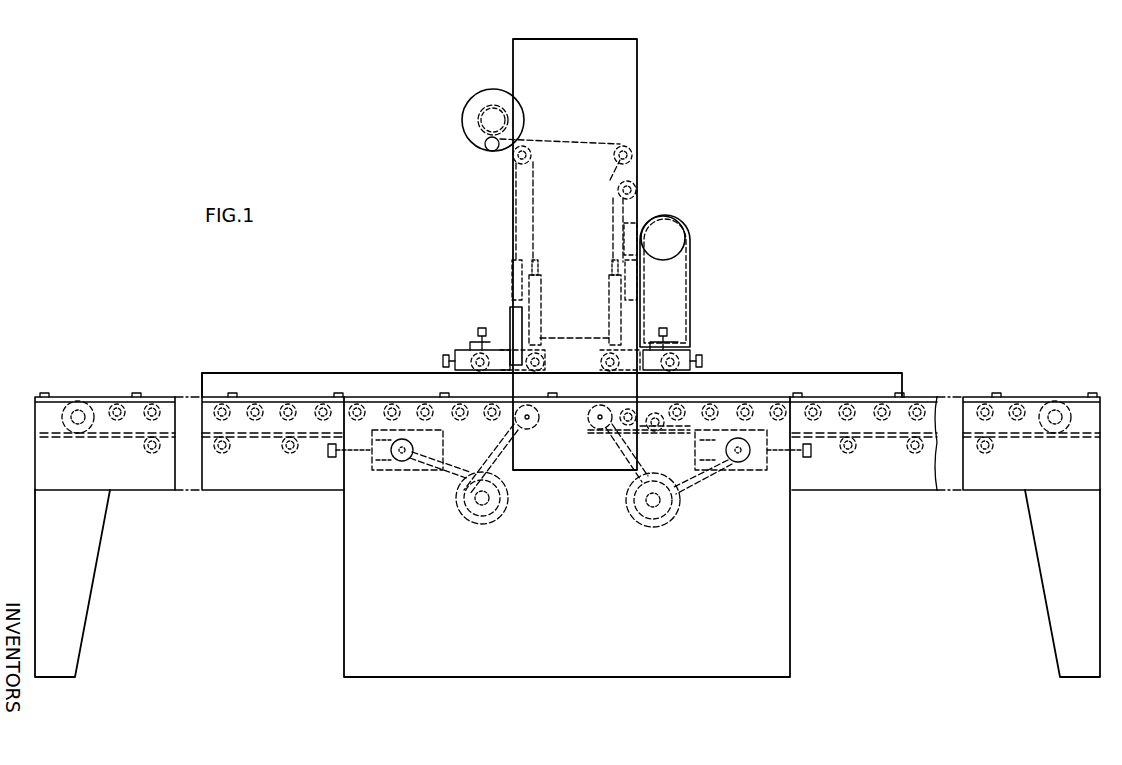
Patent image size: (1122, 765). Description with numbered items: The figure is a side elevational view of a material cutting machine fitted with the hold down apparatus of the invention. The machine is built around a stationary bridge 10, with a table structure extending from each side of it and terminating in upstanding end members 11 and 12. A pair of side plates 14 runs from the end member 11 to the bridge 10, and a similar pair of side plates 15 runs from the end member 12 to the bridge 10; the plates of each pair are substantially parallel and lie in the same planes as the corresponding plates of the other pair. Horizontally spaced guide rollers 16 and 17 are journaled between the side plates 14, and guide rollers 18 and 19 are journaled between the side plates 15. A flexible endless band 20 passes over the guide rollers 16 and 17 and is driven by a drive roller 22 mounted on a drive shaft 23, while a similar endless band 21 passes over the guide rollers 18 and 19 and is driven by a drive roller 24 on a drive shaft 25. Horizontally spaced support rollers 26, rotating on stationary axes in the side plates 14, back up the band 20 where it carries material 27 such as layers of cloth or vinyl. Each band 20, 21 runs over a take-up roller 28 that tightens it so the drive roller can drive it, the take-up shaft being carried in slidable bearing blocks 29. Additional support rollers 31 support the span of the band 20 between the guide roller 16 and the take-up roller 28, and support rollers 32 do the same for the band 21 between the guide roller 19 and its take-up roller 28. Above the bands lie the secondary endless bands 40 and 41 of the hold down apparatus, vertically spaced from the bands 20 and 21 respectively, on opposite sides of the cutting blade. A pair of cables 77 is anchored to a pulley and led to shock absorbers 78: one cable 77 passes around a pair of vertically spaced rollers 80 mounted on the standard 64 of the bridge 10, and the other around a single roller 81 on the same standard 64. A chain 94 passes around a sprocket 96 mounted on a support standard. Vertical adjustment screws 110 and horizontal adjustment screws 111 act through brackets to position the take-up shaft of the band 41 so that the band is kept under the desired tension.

The bridge 10 is at (647, 45).
The upstanding end member 11 is at (35, 505).
The upstanding end member 12 is at (1105, 472).
The side plates 14 is at (228, 502).
The side plates 15 is at (887, 502).
The guide roller 16 is at (100, 397).
The guide roller 17 is at (510, 420).
The guide roller 18 is at (622, 430).
The guide roller 19 is at (1072, 410).
The flexible endless band 20 is at (92, 437).
The flexible endless band 21 is at (888, 440).
The drive roller 22 is at (466, 522).
The drive shaft 23 is at (494, 512).
The drive roller 24 is at (676, 520).
The drive shaft 25 is at (630, 520).
The support rollers 26 is at (252, 422).
The material 27 is at (865, 370).
The take-up roller 28 is at (399, 472).
The bearing blocks 29 is at (767, 474).
The support rollers 31 is at (290, 450).
The support rollers 32 is at (846, 452).
The secondary flexible endless band 40 is at (506, 345).
The secondary flexible endless band 41 is at (606, 344).
The standard 64 is at (512, 184).
The cables 77 is at (567, 140).
The shock absorber 78 is at (612, 306).
The rollers 80 is at (633, 185).
The roller 81 is at (518, 152).
The chain 94 is at (690, 286).
The sprocket 96 is at (668, 240).
The vertical adjustment screws 110 is at (478, 330).
The horizontal adjustment screws 111 is at (443, 361).